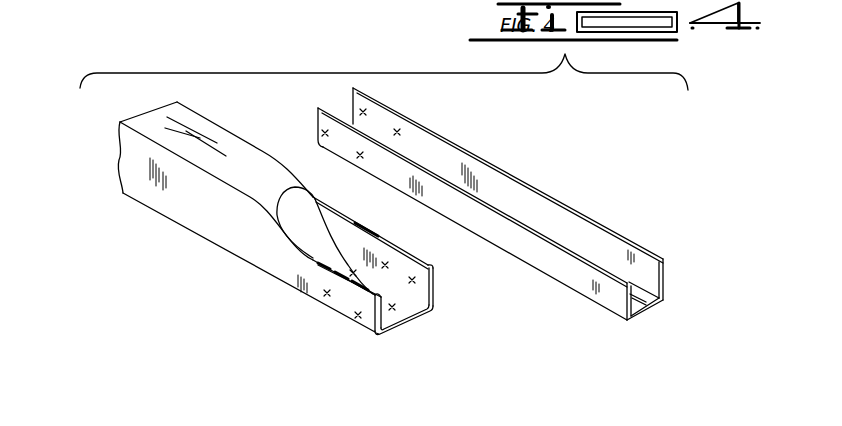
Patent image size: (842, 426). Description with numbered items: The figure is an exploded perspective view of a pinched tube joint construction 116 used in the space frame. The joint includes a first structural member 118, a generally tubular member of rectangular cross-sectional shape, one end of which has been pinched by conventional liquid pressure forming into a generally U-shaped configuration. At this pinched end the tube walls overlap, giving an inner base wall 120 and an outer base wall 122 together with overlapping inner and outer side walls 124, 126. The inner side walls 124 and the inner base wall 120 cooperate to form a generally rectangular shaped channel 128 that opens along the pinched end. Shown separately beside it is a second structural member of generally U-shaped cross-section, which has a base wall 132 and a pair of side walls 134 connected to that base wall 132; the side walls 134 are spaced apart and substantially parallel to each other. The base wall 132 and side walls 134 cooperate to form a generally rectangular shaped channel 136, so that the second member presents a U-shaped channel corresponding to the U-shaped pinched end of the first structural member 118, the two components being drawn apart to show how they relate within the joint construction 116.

The pinched tube joint construction 116 is at (528, 226).
The first structural member 118 is at (170, 225).
The inner base wall 120 is at (381, 293).
The outer base wall 122 is at (405, 330).
The inner side wall 124 is at (428, 293).
The outer side wall 126 is at (434, 278).
The rectangular shaped channel 128 is at (392, 297).
The base wall 132 is at (650, 312).
The side walls 134 is at (667, 278).
The rectangular shaped channel 136 is at (635, 282).